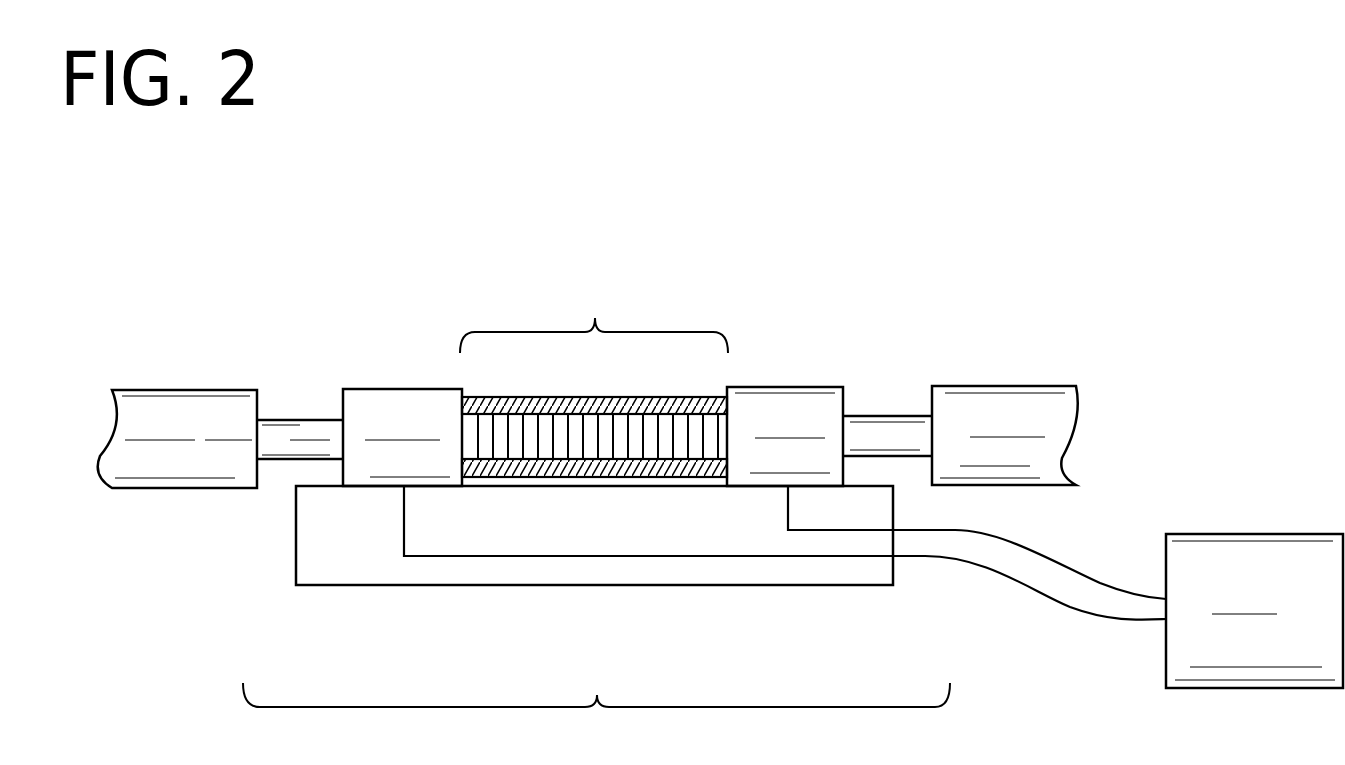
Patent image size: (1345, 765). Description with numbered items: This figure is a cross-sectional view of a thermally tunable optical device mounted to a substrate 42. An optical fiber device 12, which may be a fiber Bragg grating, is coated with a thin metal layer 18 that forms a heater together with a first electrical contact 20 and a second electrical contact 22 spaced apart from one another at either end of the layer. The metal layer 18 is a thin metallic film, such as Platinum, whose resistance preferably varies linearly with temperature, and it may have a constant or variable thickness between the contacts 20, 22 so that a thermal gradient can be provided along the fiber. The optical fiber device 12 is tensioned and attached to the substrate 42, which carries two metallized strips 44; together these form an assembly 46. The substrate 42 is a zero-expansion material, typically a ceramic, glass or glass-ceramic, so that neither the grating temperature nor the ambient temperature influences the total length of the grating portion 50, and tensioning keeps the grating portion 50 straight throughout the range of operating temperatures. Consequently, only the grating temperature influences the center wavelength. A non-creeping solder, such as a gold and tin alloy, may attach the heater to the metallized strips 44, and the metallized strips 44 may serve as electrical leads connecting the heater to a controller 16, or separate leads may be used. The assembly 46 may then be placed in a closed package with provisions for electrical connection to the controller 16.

The optical fiber device 12 is at (885, 412).
The controller 16 is at (1308, 534).
The metal layer 18 is at (468, 390).
The first electrical contact 20 is at (375, 388).
The second electrical contact 22 is at (837, 387).
The substrate 42 is at (493, 570).
The metallized strips 44 is at (915, 530).
The assembly 46 is at (596, 718).
The grating portion 50 is at (594, 318).